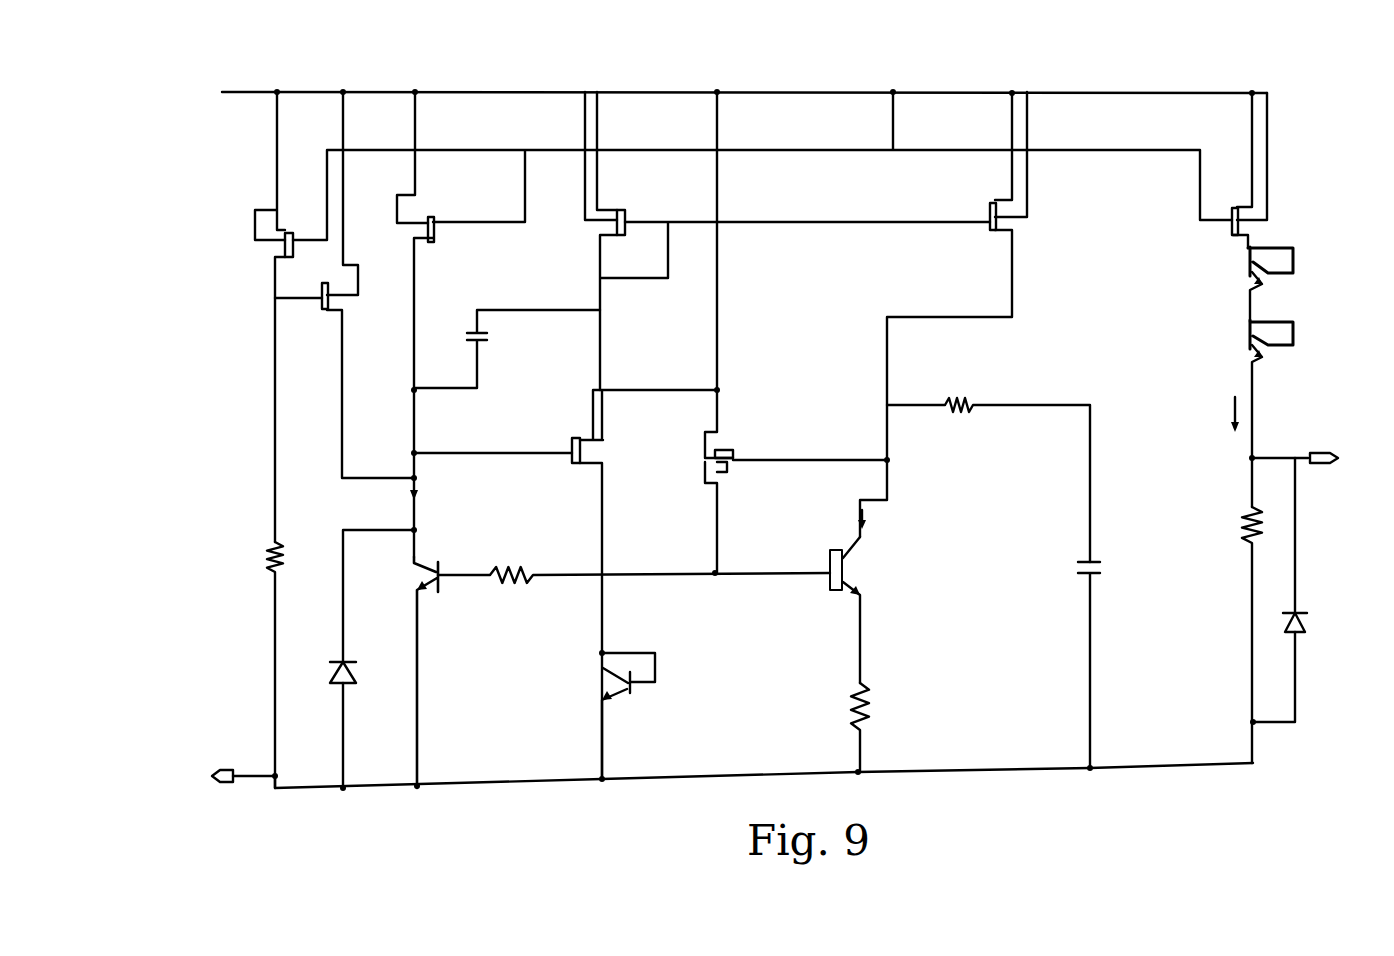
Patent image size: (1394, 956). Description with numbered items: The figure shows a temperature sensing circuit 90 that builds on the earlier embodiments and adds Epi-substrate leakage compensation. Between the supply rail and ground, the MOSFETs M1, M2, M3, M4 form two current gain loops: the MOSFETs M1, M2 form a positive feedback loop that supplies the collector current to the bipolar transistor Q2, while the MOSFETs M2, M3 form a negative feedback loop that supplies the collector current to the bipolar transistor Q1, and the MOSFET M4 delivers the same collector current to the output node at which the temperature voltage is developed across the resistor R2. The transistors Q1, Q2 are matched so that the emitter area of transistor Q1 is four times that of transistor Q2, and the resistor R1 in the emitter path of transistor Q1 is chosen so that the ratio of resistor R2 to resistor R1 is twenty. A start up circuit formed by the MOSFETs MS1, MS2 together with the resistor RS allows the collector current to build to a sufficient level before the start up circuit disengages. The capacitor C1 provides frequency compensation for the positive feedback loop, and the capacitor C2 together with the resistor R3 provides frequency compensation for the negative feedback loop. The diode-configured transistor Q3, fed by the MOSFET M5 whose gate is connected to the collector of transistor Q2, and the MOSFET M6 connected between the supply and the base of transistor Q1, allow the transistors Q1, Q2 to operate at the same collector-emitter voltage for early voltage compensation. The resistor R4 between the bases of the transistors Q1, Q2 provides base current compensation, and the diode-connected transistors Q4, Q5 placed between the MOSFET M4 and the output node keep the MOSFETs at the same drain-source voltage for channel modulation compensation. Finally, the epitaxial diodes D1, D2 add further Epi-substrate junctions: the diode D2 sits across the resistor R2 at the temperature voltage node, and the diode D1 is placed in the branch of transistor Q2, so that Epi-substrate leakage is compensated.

The temperature sensing circuit 90 is at (300, 62).
The start-up MOSFET MS1 is at (290, 317).
The start-up MOSFET MS2 is at (310, 312).
The MOSFET M1 is at (432, 210).
The MOSFET M2 is at (628, 207).
The MOSFET M3 is at (1042, 212).
The MOSFET M4 is at (1219, 182).
The MOSFET M5 is at (568, 450).
The MOSFET M6 is at (737, 455).
The BJT transistor Q1 is at (848, 568).
The BJT transistor Q2 is at (425, 565).
The BJT transistor Q3 is at (648, 716).
The transistor Q4 is at (1293, 284).
The transistor Q5 is at (1293, 413).
The resistor R1 is at (883, 727).
The resistor R2 is at (1224, 635).
The resistor R3 is at (988, 480).
The resistor R4 is at (516, 588).
The resistor RS is at (253, 665).
The capacitor C1 is at (507, 349).
The capacitor C2 is at (1069, 663).
The epitaxial diode D1 is at (328, 680).
The epitaxial diode D2 is at (1312, 622).